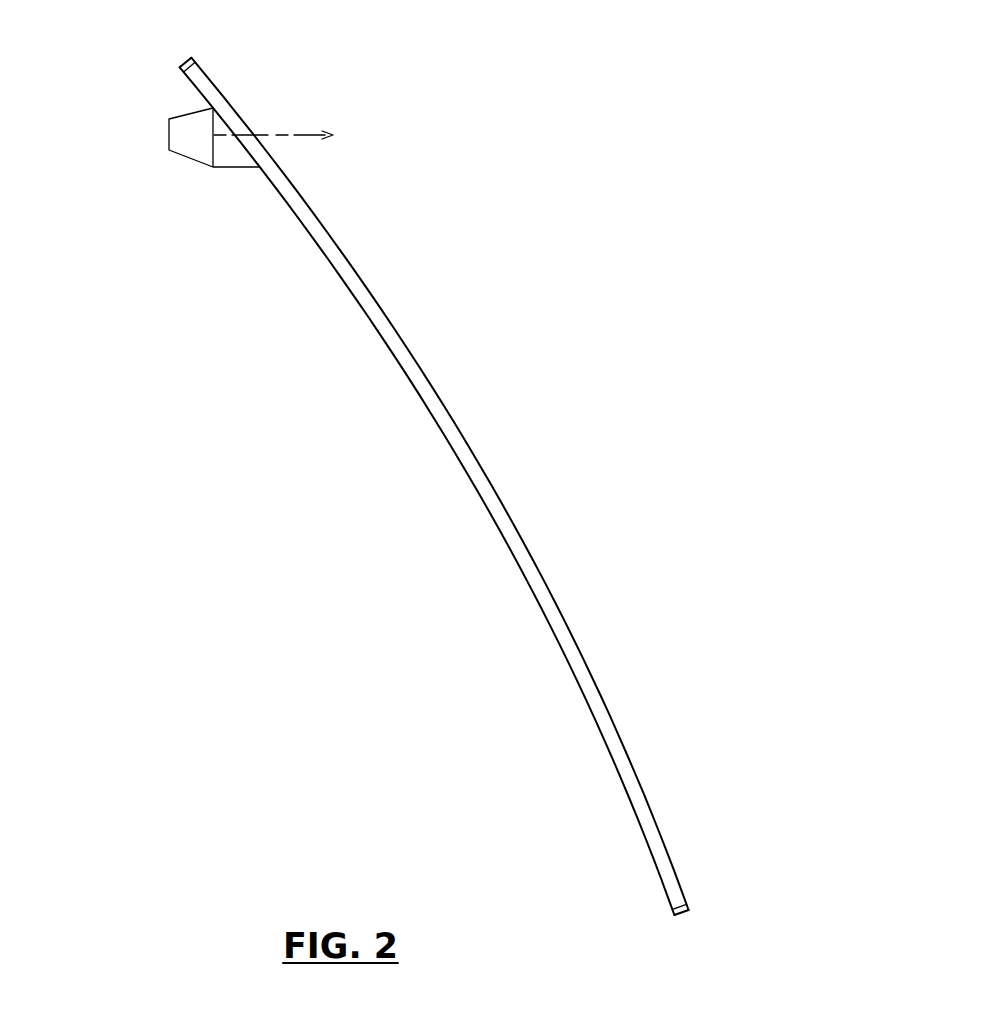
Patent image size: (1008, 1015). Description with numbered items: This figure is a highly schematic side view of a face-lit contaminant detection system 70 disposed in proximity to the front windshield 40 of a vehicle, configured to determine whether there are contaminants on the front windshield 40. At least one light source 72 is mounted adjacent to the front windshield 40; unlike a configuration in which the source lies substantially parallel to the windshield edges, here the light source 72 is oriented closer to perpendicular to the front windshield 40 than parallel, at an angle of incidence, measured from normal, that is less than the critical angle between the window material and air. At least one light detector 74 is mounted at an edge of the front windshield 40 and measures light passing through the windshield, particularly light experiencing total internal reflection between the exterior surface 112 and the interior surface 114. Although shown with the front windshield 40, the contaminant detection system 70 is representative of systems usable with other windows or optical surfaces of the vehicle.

The contaminant detection system 70 is at (626, 96).
The front windshield 40 is at (403, 355).
The light detector 74 is at (190, 69).
The light source 72 is at (183, 144).
The exterior surface 112 is at (302, 202).
The interior surface 114 is at (577, 685).